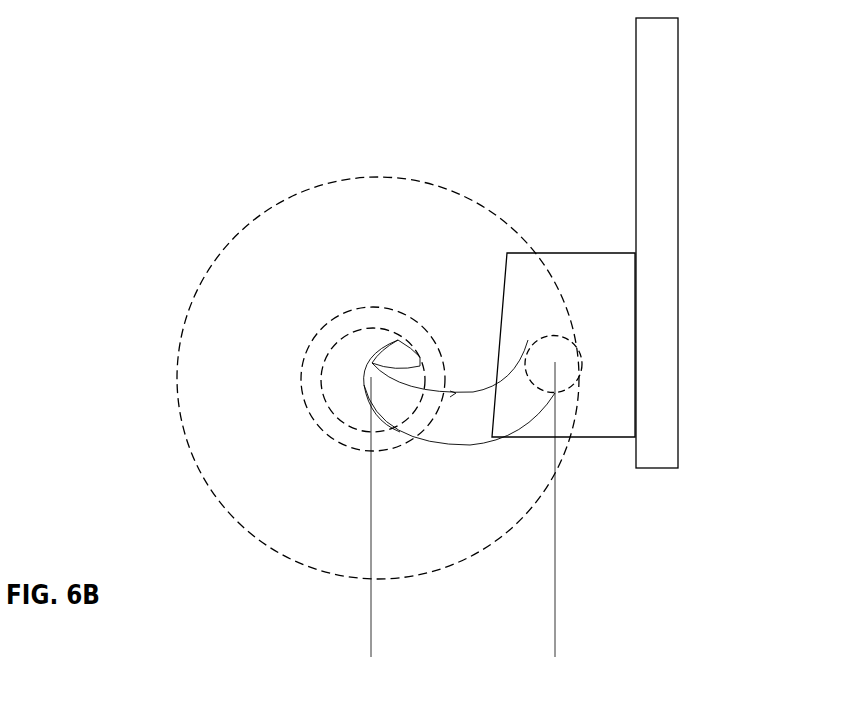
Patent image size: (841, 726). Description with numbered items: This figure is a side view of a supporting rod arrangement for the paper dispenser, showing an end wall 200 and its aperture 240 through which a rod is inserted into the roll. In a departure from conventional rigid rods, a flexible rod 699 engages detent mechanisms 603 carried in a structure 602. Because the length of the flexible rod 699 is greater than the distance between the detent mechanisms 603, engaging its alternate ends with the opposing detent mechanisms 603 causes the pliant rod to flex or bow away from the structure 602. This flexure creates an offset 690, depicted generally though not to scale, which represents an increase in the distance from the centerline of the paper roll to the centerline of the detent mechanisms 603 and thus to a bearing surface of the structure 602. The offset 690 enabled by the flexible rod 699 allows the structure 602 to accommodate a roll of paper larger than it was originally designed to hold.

The end wall 200 is at (196, 415).
The aperture 240 is at (303, 358).
The flexible rod 699 is at (475, 392).
The detent mechanism 603 is at (582, 367).
The structure 602 is at (665, 100).
The offset 690 is at (542, 617).